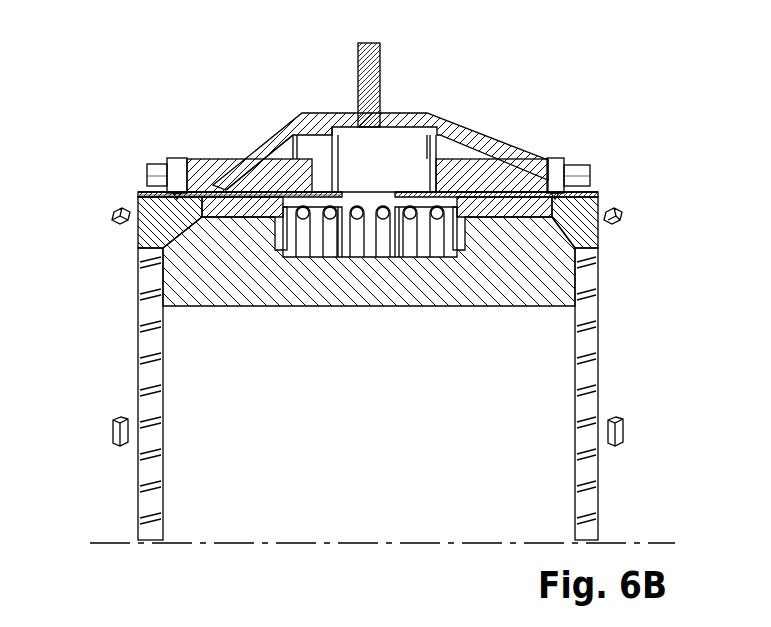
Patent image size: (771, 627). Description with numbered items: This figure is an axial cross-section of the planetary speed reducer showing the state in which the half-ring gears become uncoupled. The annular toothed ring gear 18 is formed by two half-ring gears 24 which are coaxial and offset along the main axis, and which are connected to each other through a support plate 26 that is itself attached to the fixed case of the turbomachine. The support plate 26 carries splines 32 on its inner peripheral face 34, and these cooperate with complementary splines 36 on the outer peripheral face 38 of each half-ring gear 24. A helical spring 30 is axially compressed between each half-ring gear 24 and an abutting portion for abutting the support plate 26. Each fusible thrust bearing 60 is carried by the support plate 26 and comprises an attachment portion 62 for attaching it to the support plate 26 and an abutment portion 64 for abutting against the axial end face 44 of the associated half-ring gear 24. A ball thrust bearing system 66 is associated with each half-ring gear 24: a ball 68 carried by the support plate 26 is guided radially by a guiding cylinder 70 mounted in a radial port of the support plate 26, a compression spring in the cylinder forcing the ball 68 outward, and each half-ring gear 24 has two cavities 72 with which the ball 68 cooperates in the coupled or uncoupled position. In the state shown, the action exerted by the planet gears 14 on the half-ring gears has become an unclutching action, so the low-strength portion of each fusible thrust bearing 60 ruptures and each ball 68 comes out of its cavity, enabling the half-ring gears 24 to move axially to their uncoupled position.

The planet gear 14 is at (162, 288).
The annular toothed ring gear 18 is at (470, 100).
The half-ring gear 24 is at (136, 231).
The support plate 26 is at (392, 65).
The helical spring 30 is at (383, 210).
The splines 32 is at (213, 184).
The inner peripheral face 34 is at (290, 192).
The complementary splines 36 is at (137, 192).
The outer peripheral face 38 is at (150, 190).
The axial end face 44 is at (140, 197).
The fusible thrust bearing 60 is at (156, 162).
The attachment portion 62 is at (157, 174).
The abutment portion 64 is at (104, 220).
The ball thrust bearing system 66 is at (177, 155).
The ball 68 is at (224, 226).
The guiding cylinder 70 is at (218, 178).
The cavities 72 is at (213, 198).